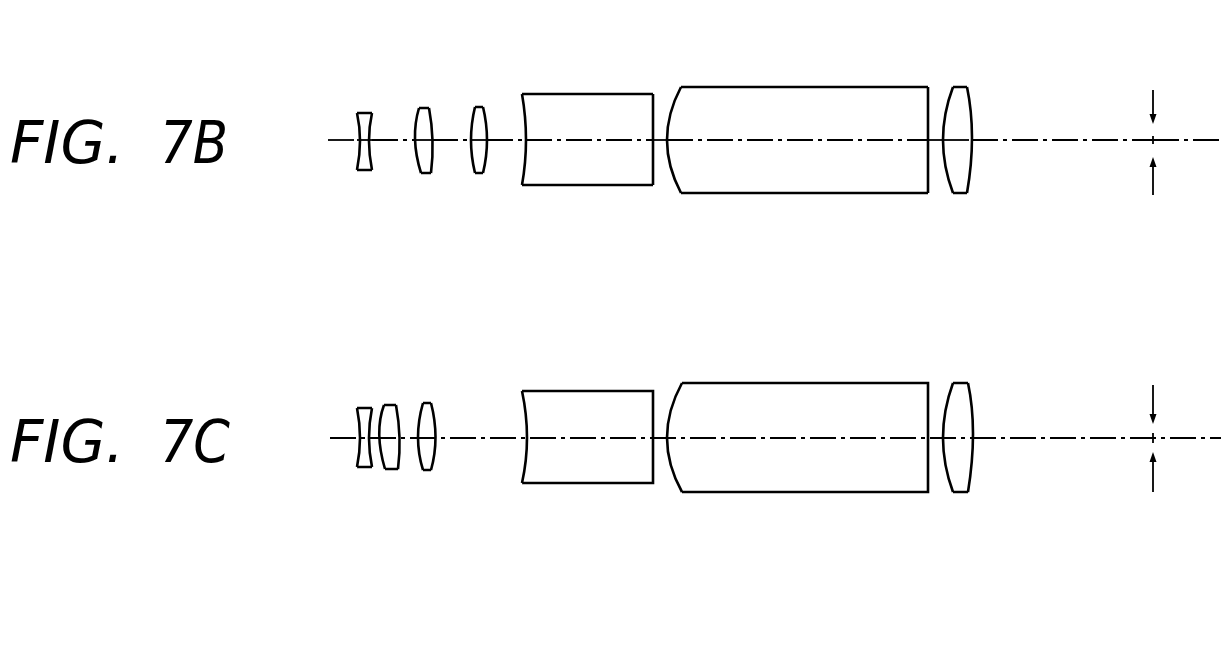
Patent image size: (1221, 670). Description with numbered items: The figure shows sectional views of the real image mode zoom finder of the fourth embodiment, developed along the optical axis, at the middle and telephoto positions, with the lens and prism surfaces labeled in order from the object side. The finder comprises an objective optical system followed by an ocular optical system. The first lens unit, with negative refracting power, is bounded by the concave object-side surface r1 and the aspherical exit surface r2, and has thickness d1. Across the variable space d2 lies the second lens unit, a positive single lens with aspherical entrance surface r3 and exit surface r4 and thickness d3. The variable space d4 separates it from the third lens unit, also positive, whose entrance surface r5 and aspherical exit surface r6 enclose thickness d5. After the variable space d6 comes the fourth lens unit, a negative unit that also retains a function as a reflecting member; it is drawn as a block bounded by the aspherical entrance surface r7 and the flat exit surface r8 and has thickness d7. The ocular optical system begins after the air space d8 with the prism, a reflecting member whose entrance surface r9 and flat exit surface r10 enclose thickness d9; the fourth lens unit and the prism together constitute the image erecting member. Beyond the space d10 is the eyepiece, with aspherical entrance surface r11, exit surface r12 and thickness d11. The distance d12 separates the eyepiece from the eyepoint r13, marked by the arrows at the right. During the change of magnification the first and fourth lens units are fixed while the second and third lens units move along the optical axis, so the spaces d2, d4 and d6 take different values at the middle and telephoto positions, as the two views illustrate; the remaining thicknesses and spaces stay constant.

The radius of curvature of first surface r1 is at (356, 114).
The radius of curvature of second surface r2 is at (372, 116).
The radius of curvature of third surface r3 is at (416, 110).
The radius of curvature of fourth surface r4 is at (430, 108).
The radius of curvature of fifth surface r5 is at (474, 108).
The radius of curvature of sixth surface r6 is at (485, 107).
The radius of curvature of seventh surface r7 is at (522, 96).
The radius of curvature of eighth surface r8 is at (652, 94).
The radius of curvature of ninth surface r9 is at (679, 92).
The radius of curvature of tenth surface r10 is at (928, 90).
The radius of curvature of eleventh surface r11 is at (951, 90).
The radius of curvature of twelfth surface r12 is at (970, 106).
The eyepoint r13 is at (1153, 102).
The thickness of first lens unit d1 is at (362, 143).
The space between first and second lens units d2 is at (392, 146).
The thickness of second lens unit d3 is at (427, 146).
The space between second and third lens units d4 is at (455, 146).
The thickness of third lens unit d5 is at (481, 146).
The space between third and fourth lens units d6 is at (503, 146).
The thickness of fourth lens unit d7 is at (593, 146).
The space between fourth lens unit and prism d8 is at (664, 146).
The thickness of prism d9 is at (800, 146).
The space between prism and eyepiece d10 is at (935, 146).
The thickness of eyepiece d11 is at (957, 143).
The space between eyepiece and eyepoint d12 is at (1062, 146).